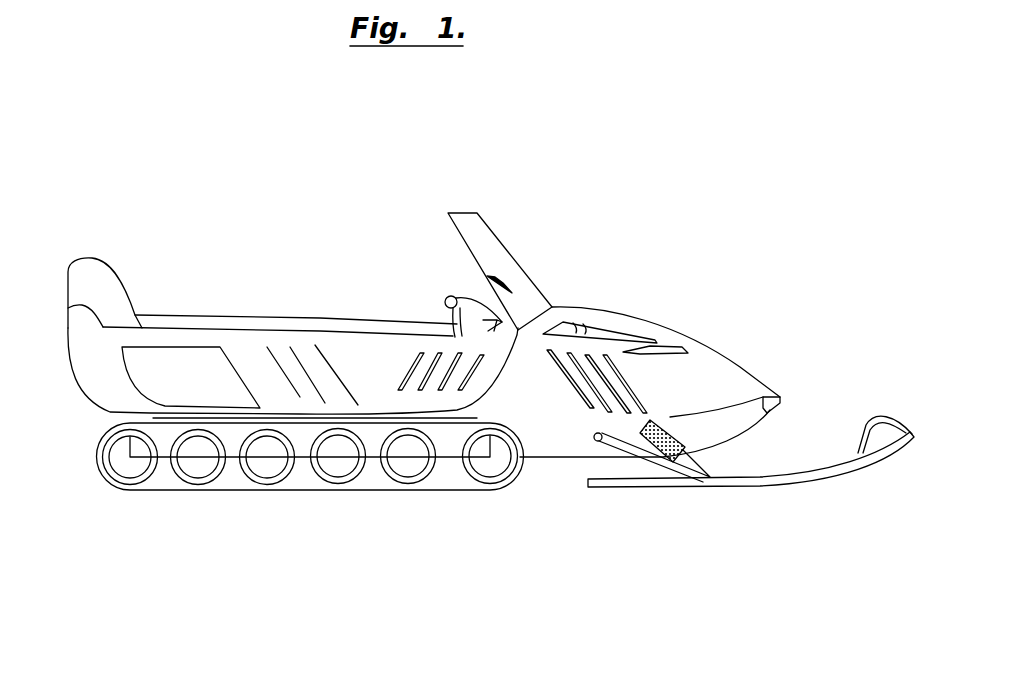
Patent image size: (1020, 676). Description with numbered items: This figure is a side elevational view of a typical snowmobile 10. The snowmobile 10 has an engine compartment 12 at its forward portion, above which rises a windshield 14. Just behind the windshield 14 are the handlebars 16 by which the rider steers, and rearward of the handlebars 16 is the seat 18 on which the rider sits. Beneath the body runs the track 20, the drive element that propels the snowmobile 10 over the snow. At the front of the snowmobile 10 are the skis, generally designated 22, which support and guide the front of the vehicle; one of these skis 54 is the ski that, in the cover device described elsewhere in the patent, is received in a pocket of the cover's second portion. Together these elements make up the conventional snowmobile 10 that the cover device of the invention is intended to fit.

The snowmobile 10 is at (230, 225).
The engine compartment 12 is at (628, 323).
The windshield 14 is at (478, 236).
The handlebars 16 is at (447, 297).
The seat 18 is at (183, 315).
The track 20 is at (342, 487).
The skis 22 is at (748, 497).
The ski 54 is at (820, 470).